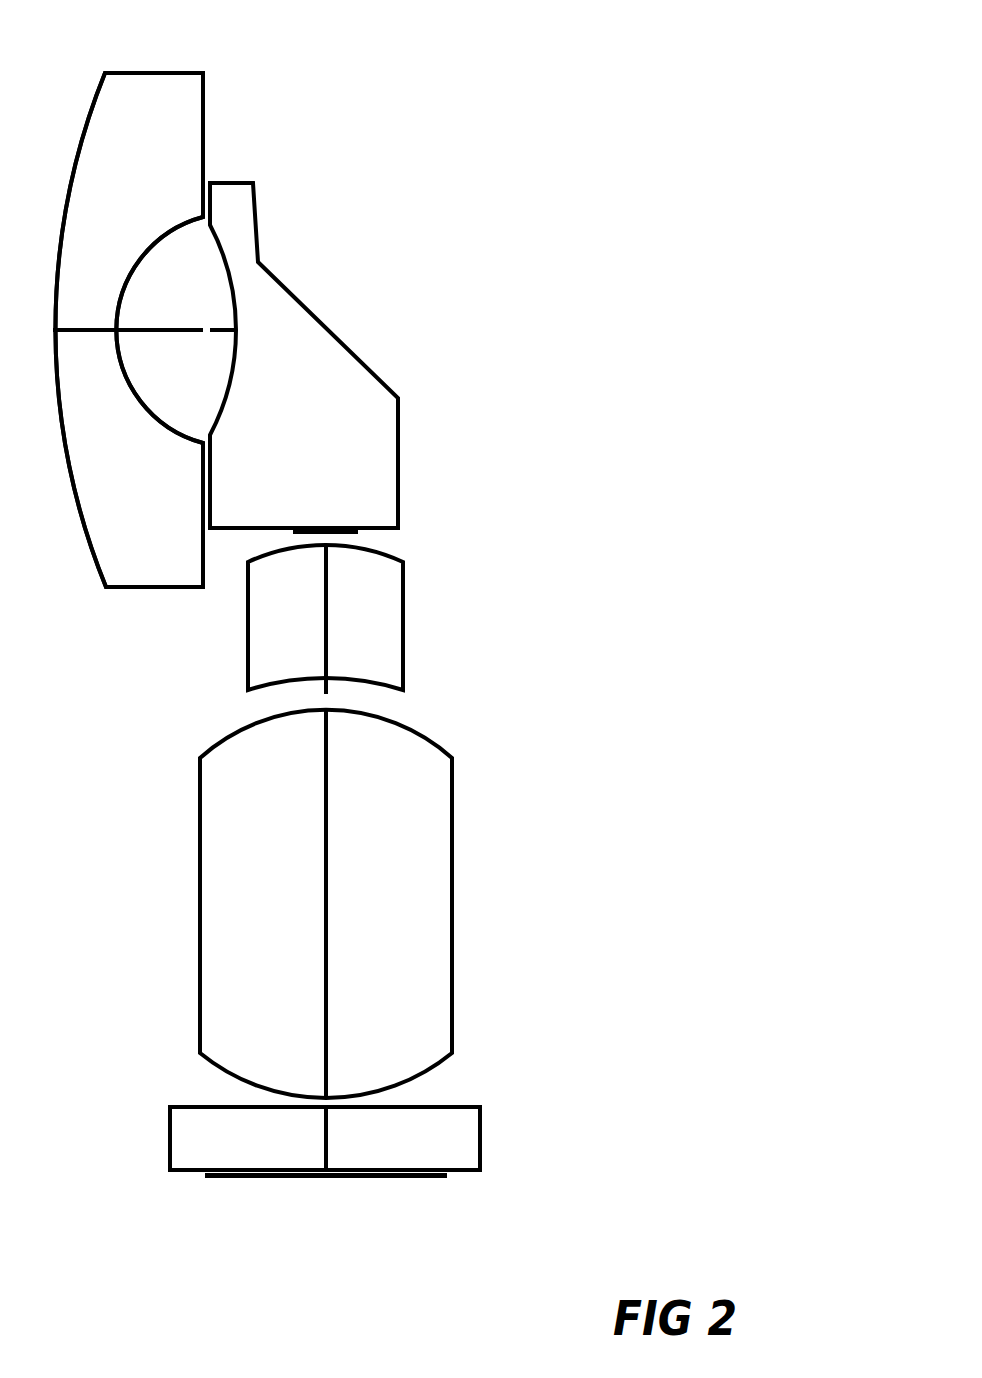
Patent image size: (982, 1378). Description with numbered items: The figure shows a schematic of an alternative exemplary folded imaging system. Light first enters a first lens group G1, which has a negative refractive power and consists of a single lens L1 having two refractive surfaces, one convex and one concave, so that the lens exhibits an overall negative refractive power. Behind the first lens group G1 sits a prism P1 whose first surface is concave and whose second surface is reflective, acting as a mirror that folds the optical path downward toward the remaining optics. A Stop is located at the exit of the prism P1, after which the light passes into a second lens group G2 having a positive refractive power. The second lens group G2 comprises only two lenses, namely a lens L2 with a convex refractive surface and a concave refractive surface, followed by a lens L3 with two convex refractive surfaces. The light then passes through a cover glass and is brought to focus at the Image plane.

The first lens group G1 is at (94, 90).
The single lens L1 is at (129, 330).
The prism P1 is at (304, 355).
The aperture stop Stop is at (325, 515).
The second lens group G2 is at (476, 819).
The first lens of second lens group L2 is at (325, 619).
The second lens of second lens group L3 is at (326, 904).
The image plane Image is at (326, 1200).